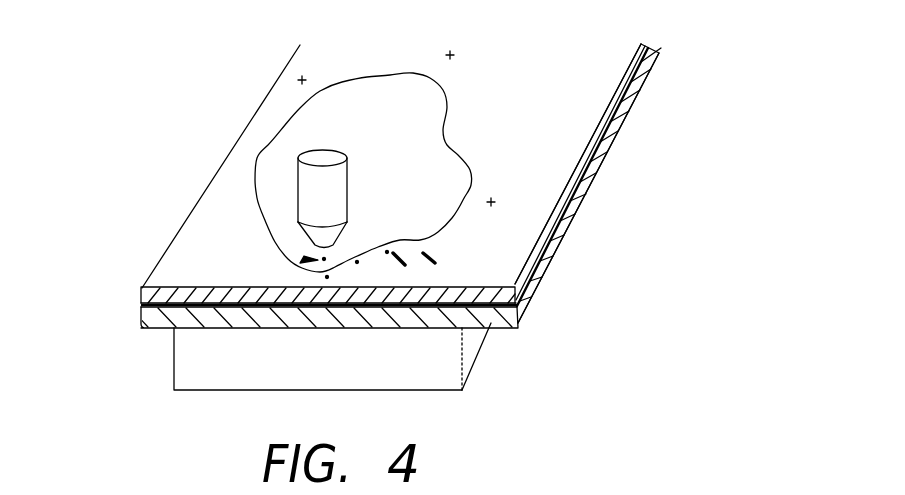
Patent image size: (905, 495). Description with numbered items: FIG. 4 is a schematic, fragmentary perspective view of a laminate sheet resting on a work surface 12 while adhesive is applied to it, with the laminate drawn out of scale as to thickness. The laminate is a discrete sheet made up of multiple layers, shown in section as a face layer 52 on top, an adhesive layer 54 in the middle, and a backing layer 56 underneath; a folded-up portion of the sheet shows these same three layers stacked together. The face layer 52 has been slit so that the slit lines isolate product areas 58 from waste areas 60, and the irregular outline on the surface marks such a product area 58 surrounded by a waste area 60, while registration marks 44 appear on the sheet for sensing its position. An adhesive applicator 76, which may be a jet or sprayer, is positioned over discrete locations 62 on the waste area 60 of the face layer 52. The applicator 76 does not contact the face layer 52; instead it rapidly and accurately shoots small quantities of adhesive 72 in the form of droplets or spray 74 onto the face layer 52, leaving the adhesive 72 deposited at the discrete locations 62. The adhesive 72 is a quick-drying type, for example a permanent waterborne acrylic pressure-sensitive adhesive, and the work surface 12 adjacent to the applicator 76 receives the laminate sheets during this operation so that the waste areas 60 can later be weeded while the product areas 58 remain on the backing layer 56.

The work surface 12 is at (430, 360).
The registration marks 44 is at (465, 58).
The face layer sheet 52 is at (588, 190).
The adhesive layer 54 is at (572, 222).
The backing layer 56 is at (557, 257).
The product areas 58 is at (302, 125).
The waste areas 60 is at (572, 103).
The discrete locations 62 is at (398, 256).
The adhesive 72 is at (425, 252).
The droplets or spray 74 is at (298, 265).
The adhesive applicator 76 is at (315, 183).